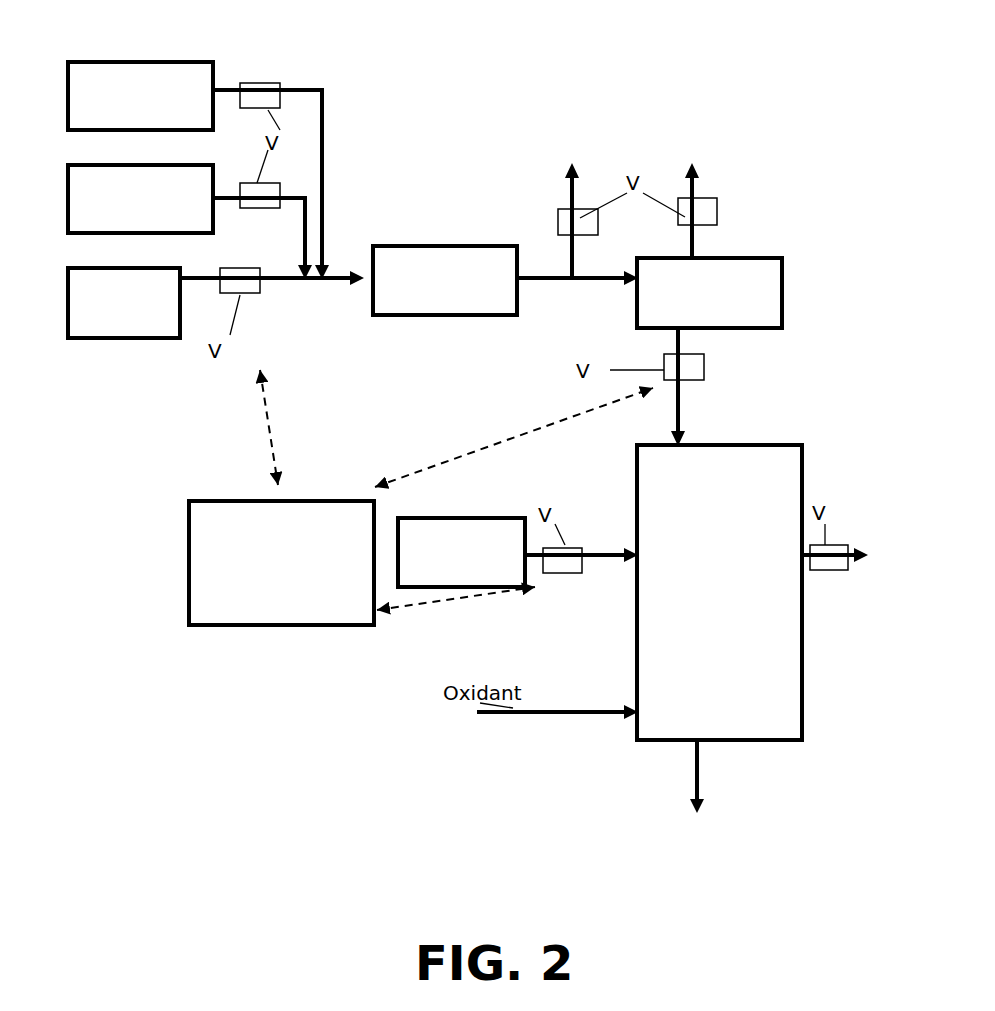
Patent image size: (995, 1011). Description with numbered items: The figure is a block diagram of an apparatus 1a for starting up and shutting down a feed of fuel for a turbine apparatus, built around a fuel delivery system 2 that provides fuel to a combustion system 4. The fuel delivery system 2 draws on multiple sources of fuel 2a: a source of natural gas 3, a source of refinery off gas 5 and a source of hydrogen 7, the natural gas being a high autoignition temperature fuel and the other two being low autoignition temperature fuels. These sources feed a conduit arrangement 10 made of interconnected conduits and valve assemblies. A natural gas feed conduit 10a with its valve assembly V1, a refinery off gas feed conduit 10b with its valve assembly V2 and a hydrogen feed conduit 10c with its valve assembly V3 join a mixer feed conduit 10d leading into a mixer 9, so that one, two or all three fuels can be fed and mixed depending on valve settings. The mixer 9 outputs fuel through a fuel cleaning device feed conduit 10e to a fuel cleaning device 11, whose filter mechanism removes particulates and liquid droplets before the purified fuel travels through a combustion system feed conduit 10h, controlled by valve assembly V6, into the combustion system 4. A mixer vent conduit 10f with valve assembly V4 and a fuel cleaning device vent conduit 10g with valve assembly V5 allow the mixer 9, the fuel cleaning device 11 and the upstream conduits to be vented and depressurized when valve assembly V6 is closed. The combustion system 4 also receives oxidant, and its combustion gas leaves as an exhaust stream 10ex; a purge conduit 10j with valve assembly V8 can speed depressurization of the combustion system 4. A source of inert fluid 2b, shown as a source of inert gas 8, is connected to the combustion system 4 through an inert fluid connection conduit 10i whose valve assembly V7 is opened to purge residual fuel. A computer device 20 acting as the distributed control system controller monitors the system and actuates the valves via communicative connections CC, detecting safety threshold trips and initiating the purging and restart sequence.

The apparatus for starting up and shutting down a feed of fuel 1a is at (82, 562).
The fuel delivery system 2 is at (212, 668).
The sources of fuel 2a is at (95, 355).
The source of inert fluid 2b is at (458, 505).
The source of natural gas 3 is at (140, 96).
The combustion system 4 is at (719, 592).
The source of refinery off gas 5 is at (140, 199).
The source of hydrogen 7 is at (124, 303).
The source of inert gas 8 is at (461, 552).
The mixer 9 is at (445, 280).
The fuel cleaning device 11 is at (709, 293).
The computer device 20 is at (190, 570).
The conduit arrangement 10 is at (420, 117).
The natural gas feed conduit 10a is at (323, 90).
The refinery off gas feed conduit 10b is at (302, 222).
The hydrogen feed conduit 10c is at (288, 282).
The mixer feed conduit 10d is at (348, 256).
The fuel cleaning device feed conduit 10e is at (550, 283).
The mixer vent conduit 10f is at (578, 170).
The fuel cleaning device vent conduit 10g is at (700, 168).
The combustion system feed conduit 10h is at (682, 406).
The inert fluid connection conduit 10i is at (600, 560).
The purge conduit 10j is at (864, 560).
The exhaust stream 10ex is at (693, 765).
The valve assembly of natural gas feed conduit V1 is at (249, 82).
The valve assembly of refinery off gas feed conduit V2 is at (247, 183).
The valve assembly of hydrogen feed conduit V3 is at (250, 295).
The valve assembly of mixer vent conduit V4 is at (563, 220).
The valve assembly of fuel cleaning device vent conduit V5 is at (718, 213).
The valve assembly of combustion system feed conduit V6 is at (705, 368).
The valve assembly of inert fluid connection conduit V7 is at (557, 572).
The valve assembly of purge conduit V8 is at (833, 568).
The communicative connections CC is at (478, 447).